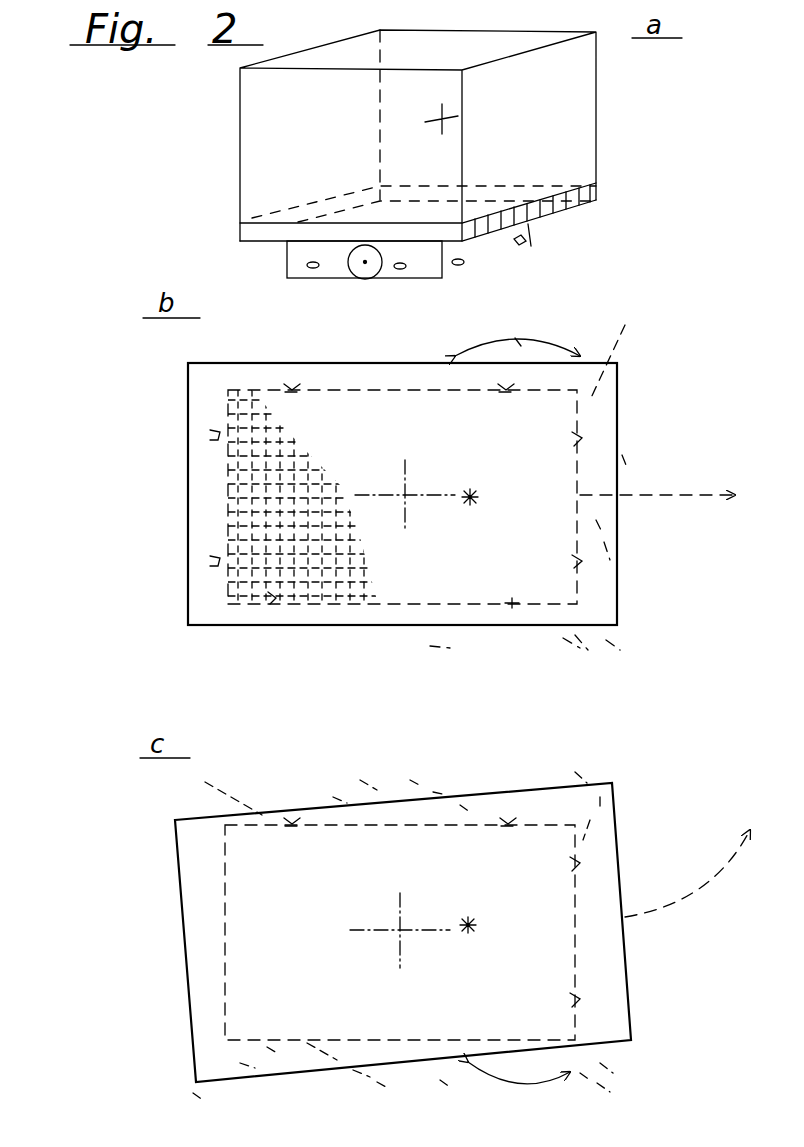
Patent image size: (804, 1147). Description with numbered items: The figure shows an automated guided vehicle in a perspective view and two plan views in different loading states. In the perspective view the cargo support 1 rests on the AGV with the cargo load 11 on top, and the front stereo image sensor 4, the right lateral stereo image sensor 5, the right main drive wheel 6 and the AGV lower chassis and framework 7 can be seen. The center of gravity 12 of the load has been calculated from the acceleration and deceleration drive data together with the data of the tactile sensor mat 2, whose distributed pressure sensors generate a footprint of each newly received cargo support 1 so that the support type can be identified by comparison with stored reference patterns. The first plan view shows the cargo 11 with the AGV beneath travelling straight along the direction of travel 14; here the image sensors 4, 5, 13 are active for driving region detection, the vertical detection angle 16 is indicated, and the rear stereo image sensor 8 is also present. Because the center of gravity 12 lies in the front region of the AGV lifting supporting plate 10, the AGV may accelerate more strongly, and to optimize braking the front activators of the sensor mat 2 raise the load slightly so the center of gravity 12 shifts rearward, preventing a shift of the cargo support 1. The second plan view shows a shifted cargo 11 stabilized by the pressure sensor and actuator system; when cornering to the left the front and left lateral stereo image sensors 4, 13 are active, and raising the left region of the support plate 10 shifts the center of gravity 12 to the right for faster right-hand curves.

The cargo support 1 is at (592, 206).
The tactile sensor mat with integrated activators 2 is at (272, 597).
The front stereo image sensor 4 is at (464, 262).
The right lateral stereo image sensor 5 is at (315, 268).
The right main drive wheel 6 is at (418, 277).
The AGV lower chassis and framework 7 is at (531, 230).
The rear stereo image sensor 8 is at (212, 560).
The AGV lifting supporting plate 10 is at (515, 420).
The cargo, cargo load 11 is at (597, 131).
The center of gravity of the load 12 is at (446, 120).
The left lateral stereo image sensor 13 is at (502, 386).
The representation of direction of travel 14 is at (682, 495).
The vertical detection angle 16 is at (576, 352).